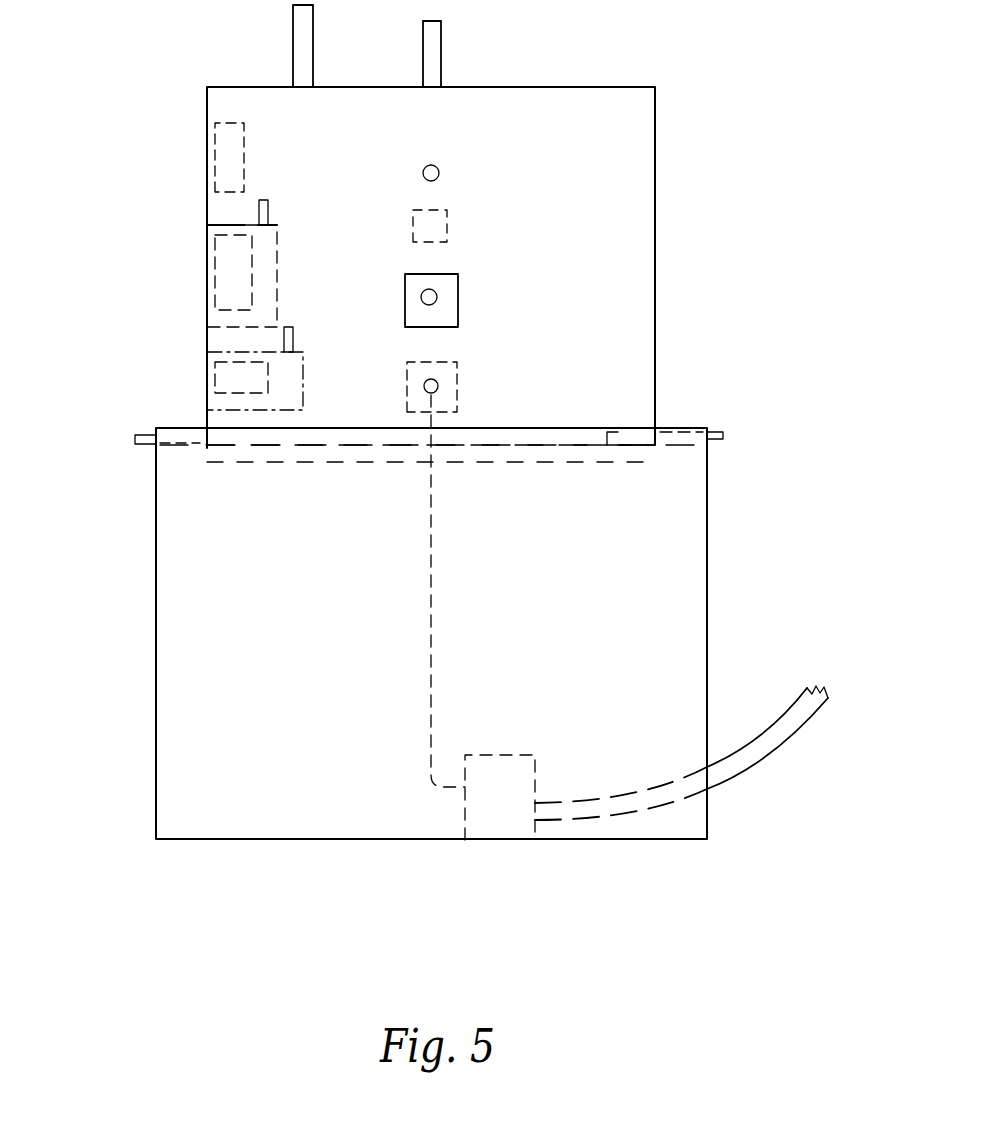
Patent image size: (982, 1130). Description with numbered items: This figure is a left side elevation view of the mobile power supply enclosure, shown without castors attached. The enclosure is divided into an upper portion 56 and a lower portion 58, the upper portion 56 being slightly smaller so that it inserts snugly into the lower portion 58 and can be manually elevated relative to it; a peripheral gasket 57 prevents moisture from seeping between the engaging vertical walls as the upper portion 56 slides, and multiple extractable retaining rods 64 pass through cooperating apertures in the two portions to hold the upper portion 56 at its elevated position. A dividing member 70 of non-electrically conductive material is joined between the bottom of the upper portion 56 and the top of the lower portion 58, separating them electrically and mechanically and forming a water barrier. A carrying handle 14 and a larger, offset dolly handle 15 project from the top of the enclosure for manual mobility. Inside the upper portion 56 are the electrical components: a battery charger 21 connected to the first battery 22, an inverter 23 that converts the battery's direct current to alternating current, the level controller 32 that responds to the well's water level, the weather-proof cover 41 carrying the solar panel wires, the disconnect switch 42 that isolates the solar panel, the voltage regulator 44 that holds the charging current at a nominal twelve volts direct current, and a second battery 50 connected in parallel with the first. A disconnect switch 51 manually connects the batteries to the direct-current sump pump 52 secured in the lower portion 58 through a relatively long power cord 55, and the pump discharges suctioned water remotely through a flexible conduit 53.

The carrying handle 14 is at (441, 45).
The dolly handle 15 is at (313, 45).
The battery charger 21 is at (235, 285).
The first 12 V.D.C. battery 22 is at (270, 263).
The inverter 23 is at (232, 171).
The level controller 32 is at (456, 218).
The flexible weather proof cover 41 is at (385, 281).
The double pole-single throw disconnect switch 42 is at (447, 307).
The voltage regulator 44 is at (246, 392).
The second 12 V.D.C. battery 50 is at (297, 406).
The double pole-single throw disconnect switch 51 is at (458, 392).
The 12 V.D.C. sump pump 52 is at (500, 797).
The flexible discharge conduit 53 is at (790, 720).
The power cord 55 is at (433, 678).
The upper portion 56 is at (449, 322).
The peripheral gasket 57 is at (488, 394).
The lower portion 58 is at (418, 588).
The extractable retaining rods 64 is at (425, 448).
The dividing member 70 is at (430, 487).